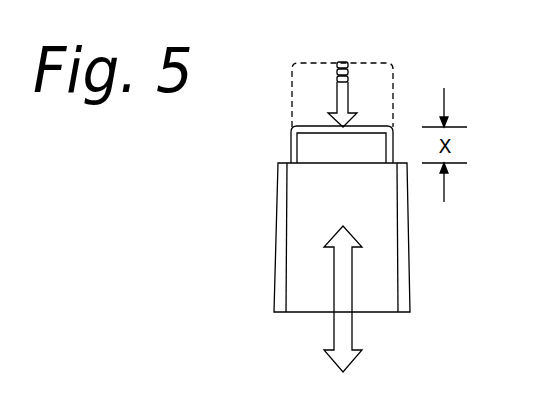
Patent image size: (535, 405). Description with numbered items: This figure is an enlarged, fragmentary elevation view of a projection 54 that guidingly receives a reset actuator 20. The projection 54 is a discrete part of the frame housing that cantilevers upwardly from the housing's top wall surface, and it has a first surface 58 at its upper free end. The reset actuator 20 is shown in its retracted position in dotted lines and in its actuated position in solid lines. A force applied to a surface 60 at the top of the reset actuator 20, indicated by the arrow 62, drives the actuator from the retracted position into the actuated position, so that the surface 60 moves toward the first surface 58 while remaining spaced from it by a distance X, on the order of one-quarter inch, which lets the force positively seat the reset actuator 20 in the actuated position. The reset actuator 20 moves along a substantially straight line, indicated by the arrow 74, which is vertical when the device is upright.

The reset actuator 20 is at (325, 150).
The projection 54 is at (310, 278).
The first surface 58 is at (283, 162).
The surface 60 is at (318, 125).
The arrow 62 is at (346, 92).
The arrow 74 is at (347, 295).